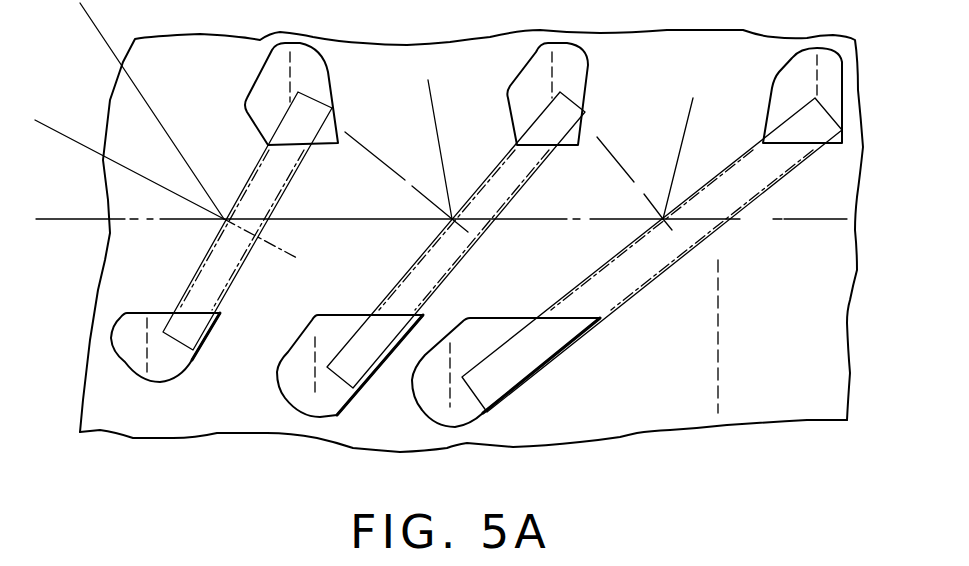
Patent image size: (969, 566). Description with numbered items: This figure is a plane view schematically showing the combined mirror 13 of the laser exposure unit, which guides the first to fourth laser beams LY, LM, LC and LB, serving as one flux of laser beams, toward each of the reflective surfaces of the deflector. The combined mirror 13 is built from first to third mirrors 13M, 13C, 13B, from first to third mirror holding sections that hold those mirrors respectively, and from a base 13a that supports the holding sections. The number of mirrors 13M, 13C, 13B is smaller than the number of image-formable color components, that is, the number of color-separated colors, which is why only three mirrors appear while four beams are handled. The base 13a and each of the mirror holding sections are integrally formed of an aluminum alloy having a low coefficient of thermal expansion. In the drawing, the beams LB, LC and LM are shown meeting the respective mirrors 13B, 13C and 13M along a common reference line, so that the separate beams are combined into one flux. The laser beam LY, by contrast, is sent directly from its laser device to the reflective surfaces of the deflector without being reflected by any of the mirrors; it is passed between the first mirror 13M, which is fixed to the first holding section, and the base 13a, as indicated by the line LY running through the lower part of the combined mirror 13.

The combined mirror 13 is at (643, 437).
The base 13a is at (727, 408).
The third mirror 13B is at (235, 199).
The second mirror 13C is at (470, 193).
The first mirror 13M is at (697, 193).
The fourth laser beam LB is at (94, 21).
The third laser beam LC is at (428, 129).
The second laser beam LM is at (678, 157).
The first laser beam LY is at (792, 221).